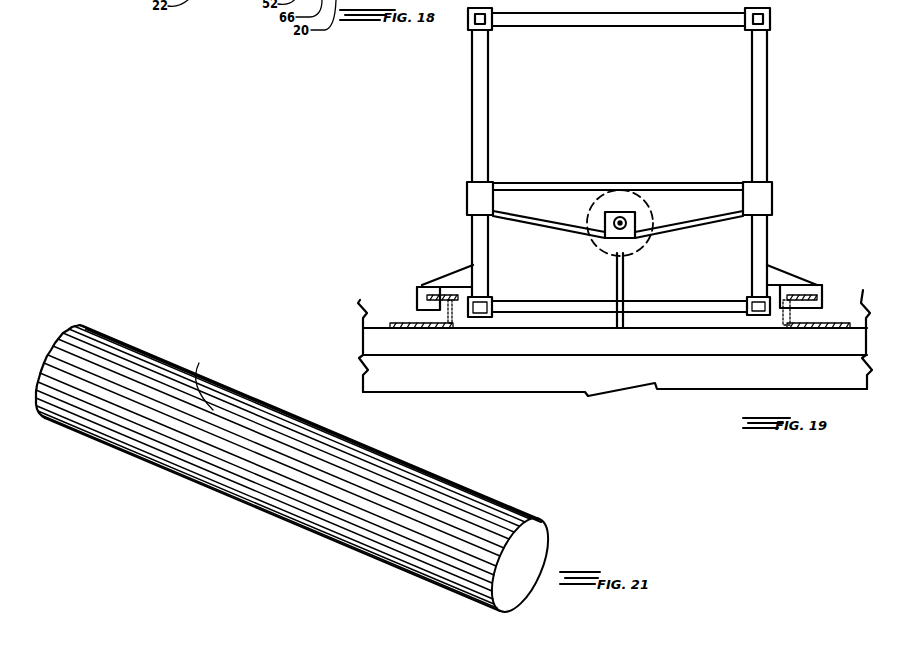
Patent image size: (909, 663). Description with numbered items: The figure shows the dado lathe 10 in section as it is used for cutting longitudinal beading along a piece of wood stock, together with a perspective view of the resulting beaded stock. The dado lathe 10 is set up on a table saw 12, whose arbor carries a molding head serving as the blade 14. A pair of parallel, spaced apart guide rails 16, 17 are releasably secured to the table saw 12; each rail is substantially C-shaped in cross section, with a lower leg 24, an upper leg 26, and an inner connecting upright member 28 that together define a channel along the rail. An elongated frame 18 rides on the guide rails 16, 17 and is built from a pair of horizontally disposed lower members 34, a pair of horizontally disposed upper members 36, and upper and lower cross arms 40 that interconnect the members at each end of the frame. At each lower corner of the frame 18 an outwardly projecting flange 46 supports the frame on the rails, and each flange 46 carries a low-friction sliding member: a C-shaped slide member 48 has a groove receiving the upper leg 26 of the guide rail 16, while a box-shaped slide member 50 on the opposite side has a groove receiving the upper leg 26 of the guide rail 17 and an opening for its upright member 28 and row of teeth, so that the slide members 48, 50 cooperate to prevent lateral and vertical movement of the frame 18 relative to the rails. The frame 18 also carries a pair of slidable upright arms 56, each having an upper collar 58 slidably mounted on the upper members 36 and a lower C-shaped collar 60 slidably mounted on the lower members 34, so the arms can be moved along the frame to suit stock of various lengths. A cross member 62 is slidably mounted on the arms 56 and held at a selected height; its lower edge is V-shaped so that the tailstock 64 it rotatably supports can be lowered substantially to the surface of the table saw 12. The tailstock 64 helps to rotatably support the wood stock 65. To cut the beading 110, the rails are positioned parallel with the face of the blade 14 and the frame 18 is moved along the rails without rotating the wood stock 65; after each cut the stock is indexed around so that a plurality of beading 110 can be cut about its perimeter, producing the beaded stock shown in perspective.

In FIG. 19, the dado lathe 10 is at (777, 50).
In FIG. 19, the table saw 12 is at (690, 392).
In FIG. 19, the blade 14 is at (645, 318).
In FIG. 19, the guide rail 16 is at (423, 287).
In FIG. 19, the guide rail 17 is at (840, 313).
In FIG. 19, the frame 18 is at (772, 63).
In FIG. 19, the lower leg 24 is at (432, 283).
In FIG. 19, the upper leg 26 is at (425, 335).
In FIG. 19, the inner connecting upright member 28 is at (463, 330).
In FIG. 19, the lower member 34 is at (490, 297).
In FIG. 19, the upper member 36 is at (492, 30).
In FIG. 19, the cross arm 40 is at (557, 22).
In FIG. 19, the flange 46 is at (458, 275).
In FIG. 19, the slide member 48 is at (418, 297).
In FIG. 19, the slide member 50 is at (807, 285).
In FIG. 19, the upright arm 56 is at (485, 70).
In FIG. 19, the upper collar 58 is at (472, 32).
In FIG. 19, the lower C-shaped collar 60 is at (503, 312).
In FIG. 19, the cross member 62 is at (658, 190).
In FIG. 19, the tailstock 64 is at (625, 220).
In FIG. 19, the wood stock 65 is at (608, 190).
In FIG. 21, the wood stock 65 is at (171, 357).
In FIG. 21, the beading 110 is at (199, 363).